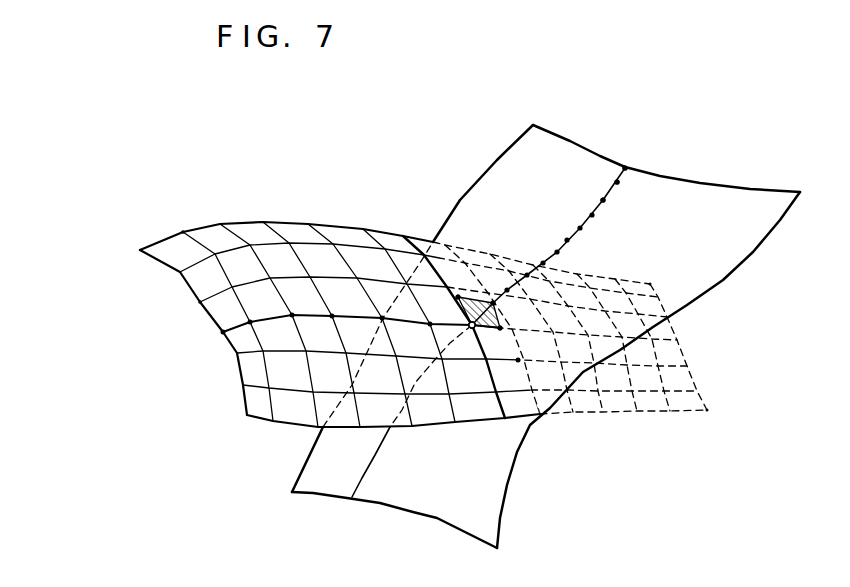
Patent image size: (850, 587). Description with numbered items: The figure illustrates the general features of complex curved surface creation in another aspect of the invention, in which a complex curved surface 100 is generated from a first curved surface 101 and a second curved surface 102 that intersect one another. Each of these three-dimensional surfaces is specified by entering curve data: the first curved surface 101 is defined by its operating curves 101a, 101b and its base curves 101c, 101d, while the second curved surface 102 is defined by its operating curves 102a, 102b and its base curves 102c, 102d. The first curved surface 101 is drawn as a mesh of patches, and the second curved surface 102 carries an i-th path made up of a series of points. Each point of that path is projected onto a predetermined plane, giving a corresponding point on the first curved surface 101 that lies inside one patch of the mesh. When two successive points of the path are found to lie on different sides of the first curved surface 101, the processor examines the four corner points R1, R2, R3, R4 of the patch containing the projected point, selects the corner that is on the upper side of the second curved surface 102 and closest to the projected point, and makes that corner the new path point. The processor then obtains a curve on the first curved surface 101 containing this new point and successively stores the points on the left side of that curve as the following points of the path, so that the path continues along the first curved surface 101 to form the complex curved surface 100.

The complex curved surface 100 is at (394, 166).
The first curved surface 101 is at (454, 321).
The operating curve of the first curved surface 101a is at (243, 328).
The operating curve of the first curved surface 101b is at (690, 353).
The base curve of the first curved surface 101c is at (163, 245).
The base curve of the first curved surface 101d is at (645, 410).
The second curved surface 102 is at (562, 317).
The operating curve of the second curved surface 102a is at (500, 158).
The operating curve of the second curved surface 102b is at (753, 252).
The base curve of the second curved surface 102c is at (590, 151).
The base curve of the second curved surface 102d is at (413, 512).
The corner point of the patch R1 is at (448, 306).
The corner point of the patch R2 is at (469, 341).
The corner point of the patch R3 is at (496, 292).
The corner point of the patch R4 is at (520, 344).